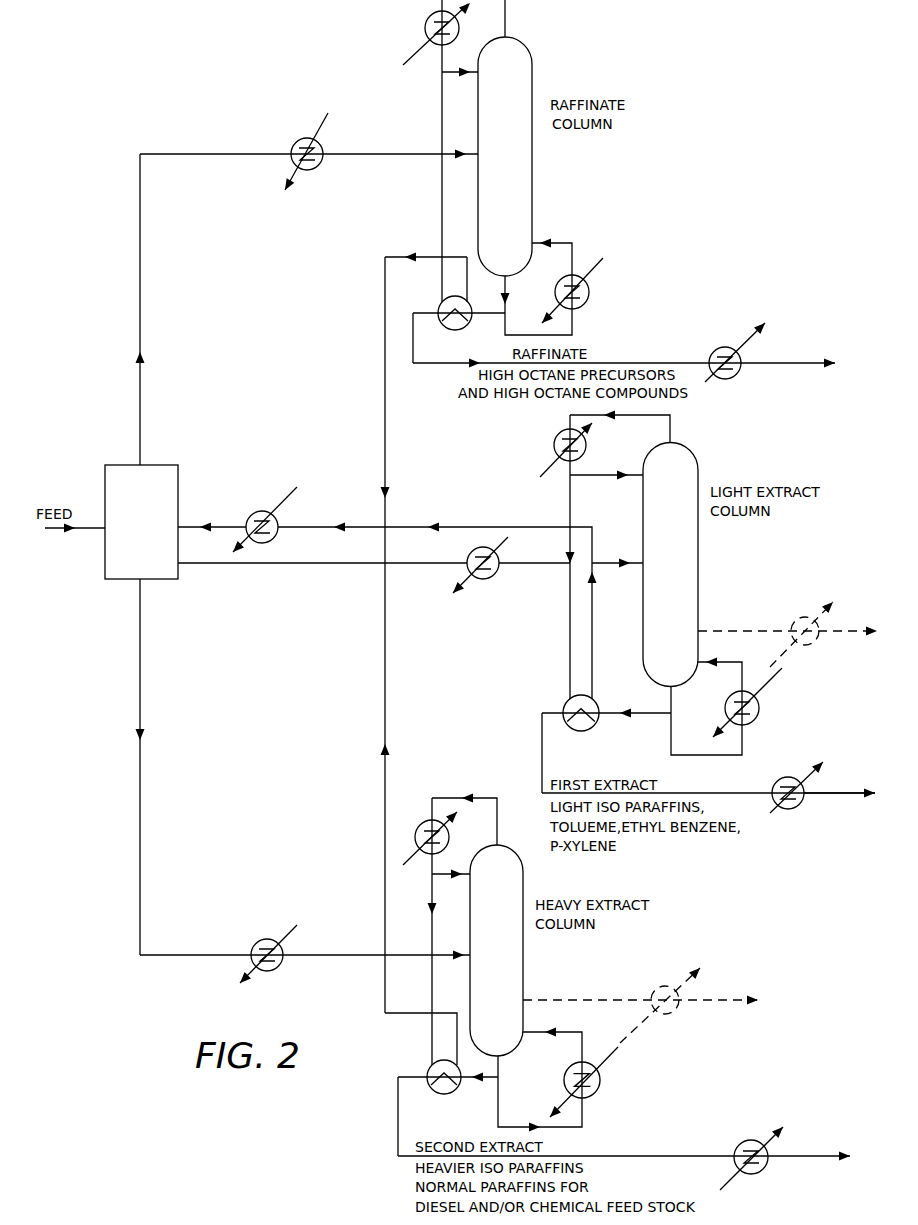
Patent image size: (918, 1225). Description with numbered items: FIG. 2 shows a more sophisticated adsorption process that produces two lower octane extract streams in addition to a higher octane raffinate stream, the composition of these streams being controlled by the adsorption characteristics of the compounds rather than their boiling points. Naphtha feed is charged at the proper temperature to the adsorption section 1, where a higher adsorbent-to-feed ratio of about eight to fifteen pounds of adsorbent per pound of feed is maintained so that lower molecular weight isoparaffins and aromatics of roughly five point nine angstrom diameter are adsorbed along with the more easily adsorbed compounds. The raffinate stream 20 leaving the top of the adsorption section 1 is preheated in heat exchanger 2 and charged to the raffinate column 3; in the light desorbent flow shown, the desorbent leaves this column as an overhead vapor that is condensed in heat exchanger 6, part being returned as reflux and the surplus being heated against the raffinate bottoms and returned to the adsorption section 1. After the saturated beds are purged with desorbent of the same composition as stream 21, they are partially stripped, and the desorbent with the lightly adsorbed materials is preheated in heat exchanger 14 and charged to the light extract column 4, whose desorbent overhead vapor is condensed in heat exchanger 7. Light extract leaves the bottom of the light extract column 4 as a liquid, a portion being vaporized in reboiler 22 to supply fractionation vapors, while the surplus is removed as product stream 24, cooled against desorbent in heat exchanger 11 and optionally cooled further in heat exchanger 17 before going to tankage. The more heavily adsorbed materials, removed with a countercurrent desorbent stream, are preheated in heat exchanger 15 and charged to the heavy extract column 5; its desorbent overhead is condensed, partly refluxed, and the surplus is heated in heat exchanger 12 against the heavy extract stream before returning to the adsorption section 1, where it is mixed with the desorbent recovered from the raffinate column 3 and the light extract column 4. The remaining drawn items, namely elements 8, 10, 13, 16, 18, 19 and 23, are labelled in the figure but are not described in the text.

The adsorption section 1 is at (105, 480).
The heat exchanger 2 is at (296, 141).
The raffinate column 3 is at (532, 140).
The light extract column 4 is at (698, 550).
The heavy extract column 5 is at (523, 935).
The heat exchanger 6 is at (432, 16).
The heat exchanger 7 is at (586, 443).
The overhead condenser of heavy extract column 8 is at (449, 836).
The reboiler of raffinate column 10 is at (454, 330).
The heat exchanger 11 is at (581, 731).
The heat exchanger 12 is at (444, 1094).
The side heat exchanger of raffinate column 13 is at (589, 290).
The heat exchanger 14 is at (497, 578).
The heat exchanger 15 is at (264, 940).
The raffinate product cooler 16 is at (724, 348).
The heat exchanger 17 is at (778, 782).
The second extract product cooler 18 is at (741, 1147).
The raffinate recycle line 19 is at (216, 523).
The raffinate stream 20 is at (140, 380).
The stream 21 is at (250, 563).
The reboiler 22 is at (759, 706).
The side heat exchanger of heavy extract column 23 is at (600, 1086).
The product stream 24 is at (832, 793).